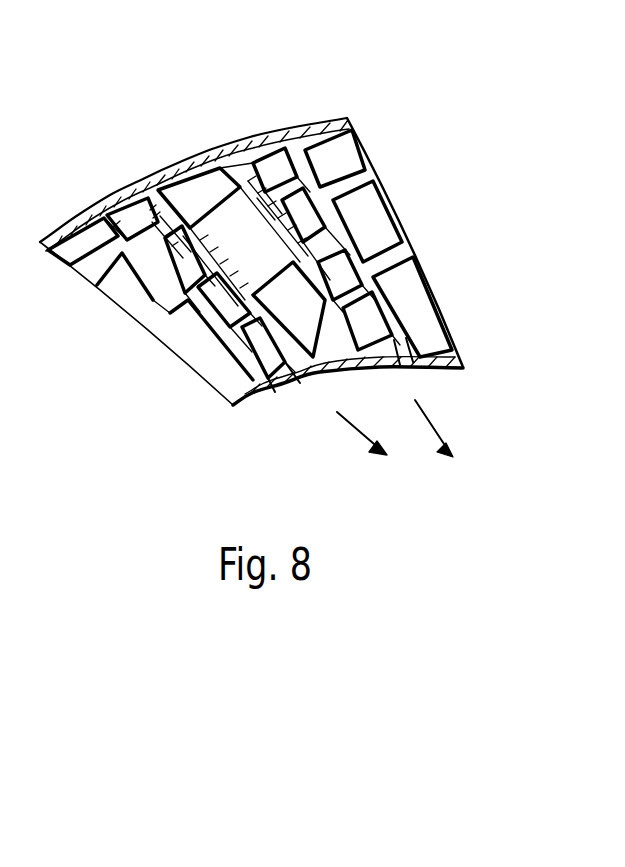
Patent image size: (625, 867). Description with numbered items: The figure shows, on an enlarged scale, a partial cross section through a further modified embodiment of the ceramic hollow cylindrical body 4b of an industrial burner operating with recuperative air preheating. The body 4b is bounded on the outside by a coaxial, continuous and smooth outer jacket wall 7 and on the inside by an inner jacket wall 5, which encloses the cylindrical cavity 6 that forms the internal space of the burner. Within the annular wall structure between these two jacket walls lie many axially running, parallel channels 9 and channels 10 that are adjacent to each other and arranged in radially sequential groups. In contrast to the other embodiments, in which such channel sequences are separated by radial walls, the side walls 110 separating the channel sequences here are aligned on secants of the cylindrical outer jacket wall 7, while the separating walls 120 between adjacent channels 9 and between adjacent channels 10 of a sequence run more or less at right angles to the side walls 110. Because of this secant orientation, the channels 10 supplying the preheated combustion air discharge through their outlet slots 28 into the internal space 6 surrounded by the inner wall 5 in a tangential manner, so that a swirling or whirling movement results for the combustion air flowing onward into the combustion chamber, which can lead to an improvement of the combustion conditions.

The hollow cylindrical body 4b is at (325, 106).
The inner jacket wall 5 is at (439, 373).
The cylindrical cavity 6 is at (388, 495).
The outer jacket wall 7 is at (104, 200).
The channels 9 is at (188, 193).
The channels 10 is at (205, 290).
The outlet slots 28 is at (302, 382).
The side walls 110 is at (272, 334).
The separating walls 120 is at (153, 240).